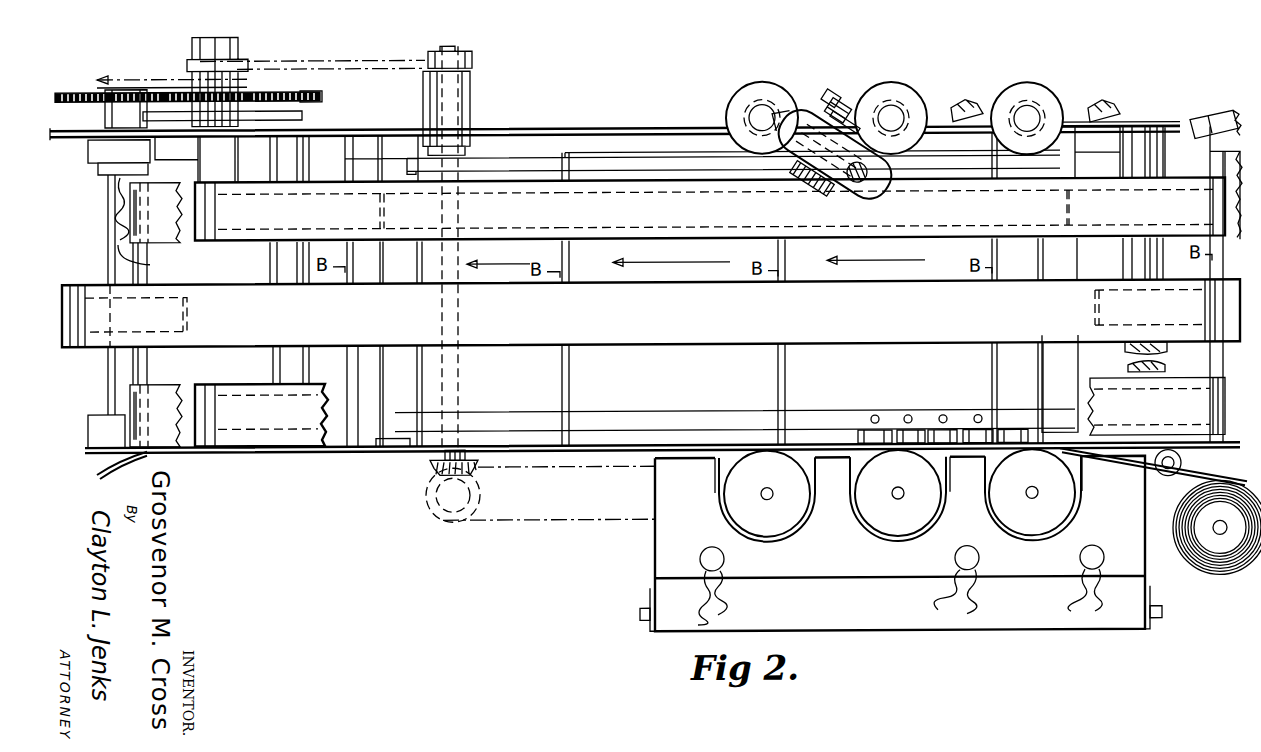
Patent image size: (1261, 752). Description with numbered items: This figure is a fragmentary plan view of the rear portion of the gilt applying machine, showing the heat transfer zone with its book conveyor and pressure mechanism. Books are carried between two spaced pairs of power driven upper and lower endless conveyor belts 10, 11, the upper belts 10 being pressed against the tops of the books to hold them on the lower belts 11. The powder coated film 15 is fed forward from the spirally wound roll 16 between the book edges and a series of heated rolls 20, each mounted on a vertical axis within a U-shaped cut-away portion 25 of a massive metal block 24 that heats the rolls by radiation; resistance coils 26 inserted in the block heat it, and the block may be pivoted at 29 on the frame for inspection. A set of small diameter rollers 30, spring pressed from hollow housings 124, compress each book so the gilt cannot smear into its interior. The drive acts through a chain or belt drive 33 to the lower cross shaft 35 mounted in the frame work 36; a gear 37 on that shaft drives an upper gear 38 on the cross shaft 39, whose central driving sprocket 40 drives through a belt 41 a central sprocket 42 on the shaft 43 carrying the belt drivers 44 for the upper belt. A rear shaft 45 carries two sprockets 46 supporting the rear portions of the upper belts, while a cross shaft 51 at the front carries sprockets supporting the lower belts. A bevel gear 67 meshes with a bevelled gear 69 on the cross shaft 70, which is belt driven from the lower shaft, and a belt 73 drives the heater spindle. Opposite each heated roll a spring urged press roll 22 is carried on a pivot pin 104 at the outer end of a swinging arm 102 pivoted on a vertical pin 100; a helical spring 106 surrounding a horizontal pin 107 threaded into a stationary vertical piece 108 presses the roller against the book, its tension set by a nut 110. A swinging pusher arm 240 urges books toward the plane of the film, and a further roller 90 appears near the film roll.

The upper endless conveyor belt 10 is at (262, 183).
The lower endless conveyor belt 11 is at (160, 183).
The powder coated film 15 is at (118, 472).
The spirally wound roll 16 is at (1218, 581).
The heated roll 20 is at (762, 489).
The spring pressed roller 22 is at (752, 90).
The metal block 24 is at (838, 567).
The U-shaped cut-away portion 25 is at (815, 512).
The wire coil of resistance element 26 is at (725, 563).
The pivot 29 is at (640, 616).
The roller 30 is at (972, 432).
The chain or belt drive 33 is at (302, 116).
The lower cross shaft 35 is at (224, 38).
The frame work 36 is at (592, 131).
The gear 37 is at (322, 97).
The upper gear 38 is at (68, 92).
The cross shaft 39 is at (110, 182).
The driving pulley or sprocket 40 is at (188, 312).
The belt 41 is at (256, 347).
The central sprocket 42 is at (1093, 313).
The shaft 43 is at (1125, 262).
The belt driver 44 is at (1070, 207).
The shaft 45 is at (272, 270).
The sprocket 46 is at (300, 199).
The cross shaft 51 is at (1126, 374).
The bevel gear 67 is at (428, 514).
The bevelled gear 69 is at (430, 464).
The cross shaft 70 is at (448, 48).
The belt 73 is at (590, 524).
The idler roller 90 is at (1163, 475).
The vertical pin 100 is at (856, 187).
The swinging arm 102 is at (802, 126).
The pivot pin 104 is at (749, 121).
The helical spring 106 is at (830, 96).
The horizontal pin 107 is at (851, 120).
The stationary vertical piece 108 is at (824, 194).
The nut 110 is at (840, 104).
The hollow housing 124 is at (840, 415).
The swinging pusher arm 240 is at (1198, 122).